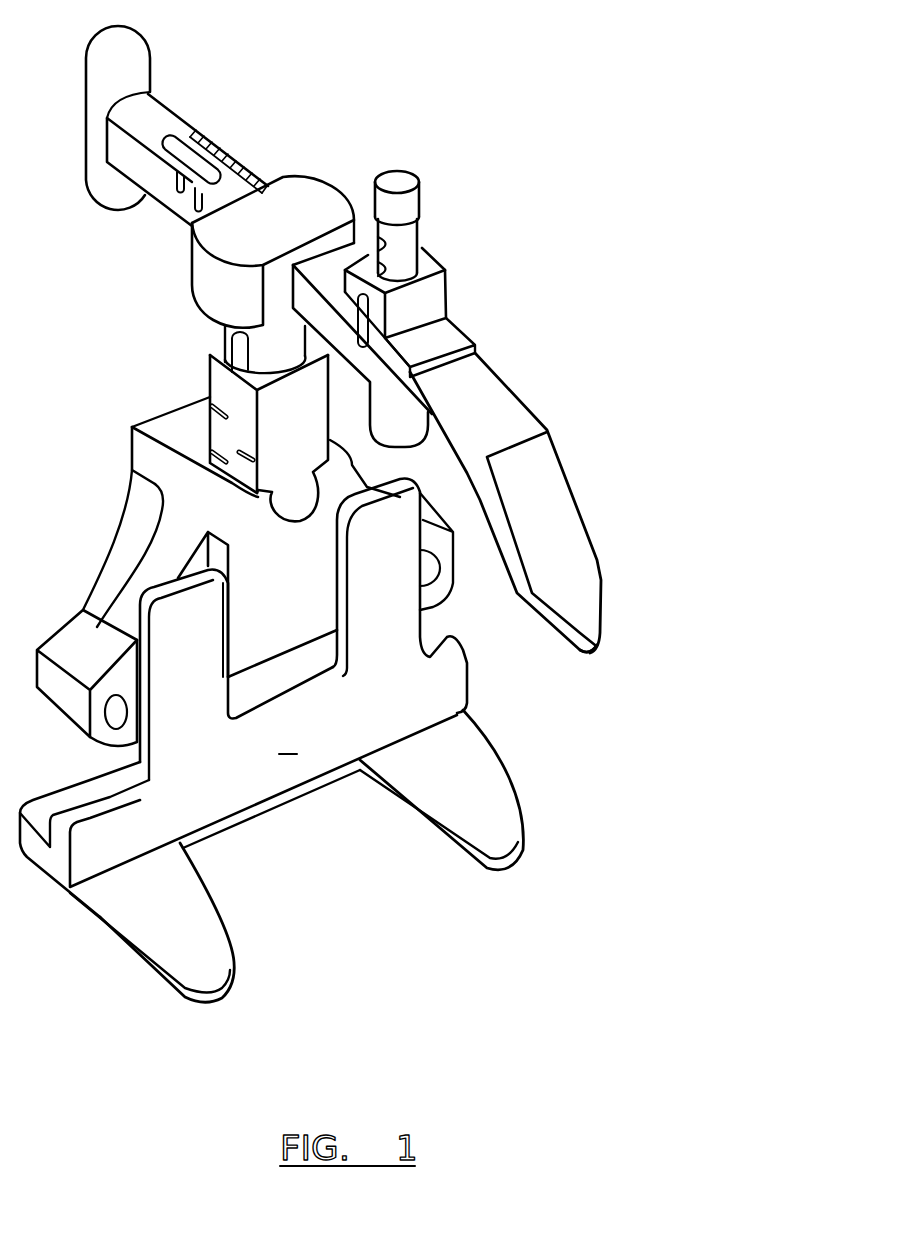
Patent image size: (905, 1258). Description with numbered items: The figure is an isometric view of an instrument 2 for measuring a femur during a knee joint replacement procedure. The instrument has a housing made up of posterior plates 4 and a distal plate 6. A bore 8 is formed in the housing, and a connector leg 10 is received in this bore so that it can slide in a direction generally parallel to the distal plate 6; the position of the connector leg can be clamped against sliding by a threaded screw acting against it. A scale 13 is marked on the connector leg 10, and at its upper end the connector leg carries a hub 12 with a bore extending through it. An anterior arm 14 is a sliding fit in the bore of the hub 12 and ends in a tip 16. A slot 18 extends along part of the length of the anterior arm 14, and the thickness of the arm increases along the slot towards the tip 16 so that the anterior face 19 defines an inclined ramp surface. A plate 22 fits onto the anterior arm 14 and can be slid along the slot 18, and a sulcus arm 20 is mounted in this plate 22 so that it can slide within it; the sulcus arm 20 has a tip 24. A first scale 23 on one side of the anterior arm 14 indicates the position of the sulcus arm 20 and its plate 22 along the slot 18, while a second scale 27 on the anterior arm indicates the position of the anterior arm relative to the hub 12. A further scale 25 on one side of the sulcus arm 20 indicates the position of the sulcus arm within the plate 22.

The instrument 2 is at (482, 272).
The posterior plates 4 is at (467, 800).
The distal plate 6 is at (243, 698).
The bore 8 is at (238, 477).
The connector leg 10 is at (228, 385).
The hub 12 is at (300, 203).
The scale 13 is at (210, 428).
The anterior arm 14 is at (503, 415).
The tip 16 is at (598, 650).
The slot 18 is at (200, 160).
The anterior face 19 is at (463, 333).
The sulcus arm 20 is at (402, 178).
The plate 22 is at (433, 258).
The first scale 23 is at (395, 479).
The tip 24 is at (400, 420).
The scale 25 is at (377, 249).
The second scale 27 is at (188, 208).